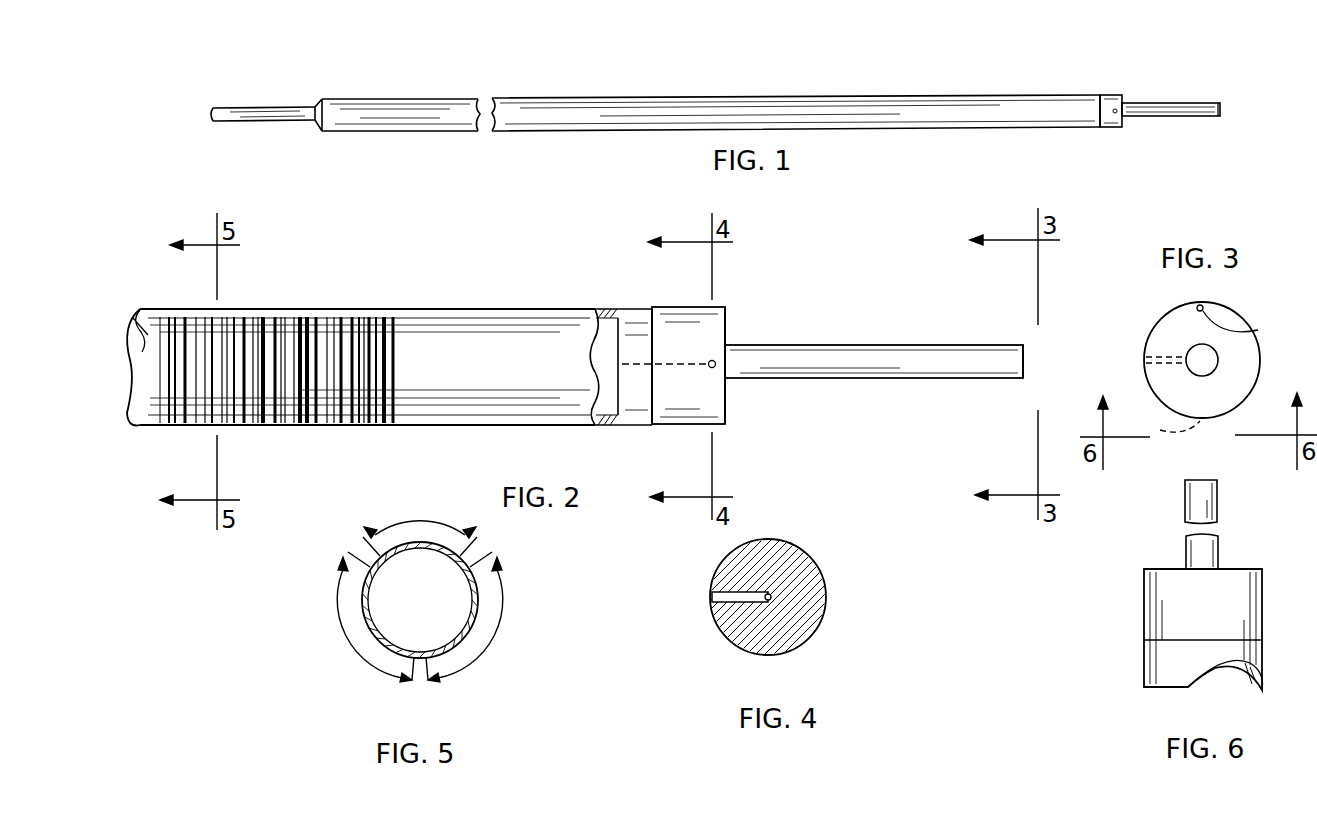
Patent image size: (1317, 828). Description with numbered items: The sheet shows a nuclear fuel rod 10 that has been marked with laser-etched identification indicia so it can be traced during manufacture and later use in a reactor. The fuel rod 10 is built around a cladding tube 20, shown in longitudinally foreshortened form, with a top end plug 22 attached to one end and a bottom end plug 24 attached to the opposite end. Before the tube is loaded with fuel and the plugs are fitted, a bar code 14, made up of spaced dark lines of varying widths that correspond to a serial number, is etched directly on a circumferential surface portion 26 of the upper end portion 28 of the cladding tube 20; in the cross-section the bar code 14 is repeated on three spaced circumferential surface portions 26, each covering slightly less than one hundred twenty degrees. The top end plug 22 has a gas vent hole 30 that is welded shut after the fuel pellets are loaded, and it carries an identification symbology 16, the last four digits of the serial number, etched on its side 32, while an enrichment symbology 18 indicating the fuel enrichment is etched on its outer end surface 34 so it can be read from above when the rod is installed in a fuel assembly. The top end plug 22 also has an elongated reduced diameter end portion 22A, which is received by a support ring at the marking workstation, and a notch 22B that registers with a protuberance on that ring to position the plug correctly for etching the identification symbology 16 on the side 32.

In FIG. 1, the nuclear fuel rod 10 is at (951, 76).
In FIG. 2, the nuclear fuel rod 10 is at (528, 295).
In FIG. 2, the bar code 14 is at (409, 373).
In FIG. 5, the bar code 14 is at (402, 527).
In FIG. 3, the identification symbology 16 is at (1205, 416).
In FIG. 6, the identification symbology 16 is at (1180, 578).
In FIG. 3, the enrichment symbology 18 is at (1212, 371).
In FIG. 6, the enrichment symbology 18 is at (1201, 479).
In FIG. 1, the cladding tube 20 is at (694, 100).
In FIG. 2, the cladding tube 20 is at (441, 309).
In FIG. 5, the cladding tube 20 is at (486, 588).
In FIG. 1, the top end plug 22 is at (1112, 126).
In FIG. 2, the top end plug 22 is at (732, 400).
In FIG. 4, the top end plug 22 is at (828, 608).
In FIG. 1, the reduced diameter end portion 22A is at (1170, 105).
In FIG. 2, the reduced diameter end portion 22A is at (877, 380).
In FIG. 3, the reduced diameter end portion 22A is at (1185, 353).
In FIG. 6, the reduced diameter end portion 22A is at (1185, 549).
In FIG. 3, the notch 22B is at (1258, 330).
In FIG. 1, the bottom end plug 24 is at (320, 108).
In FIG. 2, the circumferential surface portion 26 is at (155, 383).
In FIG. 5, the circumferential surface portion 26 is at (366, 552).
In FIG. 2, the upper end portion 28 is at (530, 426).
In FIG. 1, the gas vent hole 30 is at (1114, 112).
In FIG. 2, the gas vent hole 30 is at (716, 358).
In FIG. 4, the gas vent hole 30 is at (712, 597).
In FIG. 1, the side 32 is at (1110, 100).
In FIG. 2, the side 32 is at (683, 408).
In FIG. 3, the side 32 is at (1146, 378).
In FIG. 6, the side 32 is at (1148, 615).
In FIG. 1, the outer end surface 34 is at (1222, 108).
In FIG. 2, the outer end surface 34 is at (1025, 355).
In FIG. 3, the outer end surface 34 is at (1193, 347).
In FIG. 6, the outer end surface 34 is at (1212, 478).